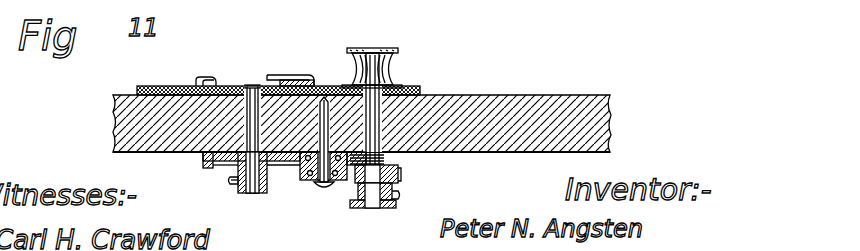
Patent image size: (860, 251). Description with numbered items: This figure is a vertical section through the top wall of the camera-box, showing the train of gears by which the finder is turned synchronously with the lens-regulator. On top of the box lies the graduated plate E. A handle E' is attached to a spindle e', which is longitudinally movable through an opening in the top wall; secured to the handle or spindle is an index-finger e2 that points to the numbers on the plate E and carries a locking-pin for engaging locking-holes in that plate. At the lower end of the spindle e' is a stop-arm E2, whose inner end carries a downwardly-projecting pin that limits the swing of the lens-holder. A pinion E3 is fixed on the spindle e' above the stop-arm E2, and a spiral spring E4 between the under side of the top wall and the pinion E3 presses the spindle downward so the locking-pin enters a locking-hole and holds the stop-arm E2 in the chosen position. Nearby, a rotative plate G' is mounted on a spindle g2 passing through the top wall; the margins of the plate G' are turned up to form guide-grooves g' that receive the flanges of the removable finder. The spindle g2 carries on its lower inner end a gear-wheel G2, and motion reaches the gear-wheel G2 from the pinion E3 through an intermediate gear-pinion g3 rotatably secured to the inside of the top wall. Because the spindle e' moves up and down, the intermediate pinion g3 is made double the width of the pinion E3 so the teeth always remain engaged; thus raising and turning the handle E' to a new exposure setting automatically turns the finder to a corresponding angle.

The board A is at (559, 95).
The plate E is at (275, 75).
The handle E' is at (390, 56).
The spindle e' is at (404, 130).
The index-finger e2 is at (388, 86).
The stop-arm E2 is at (386, 208).
The pinion E3 is at (403, 178).
The spiral spring E4 is at (400, 160).
The rotative plate G' is at (250, 115).
The guide-grooves g' is at (256, 60).
The gear-wheel G2 is at (203, 157).
The spindle g2 is at (267, 182).
The intermediate gear-pinion g3 is at (342, 186).